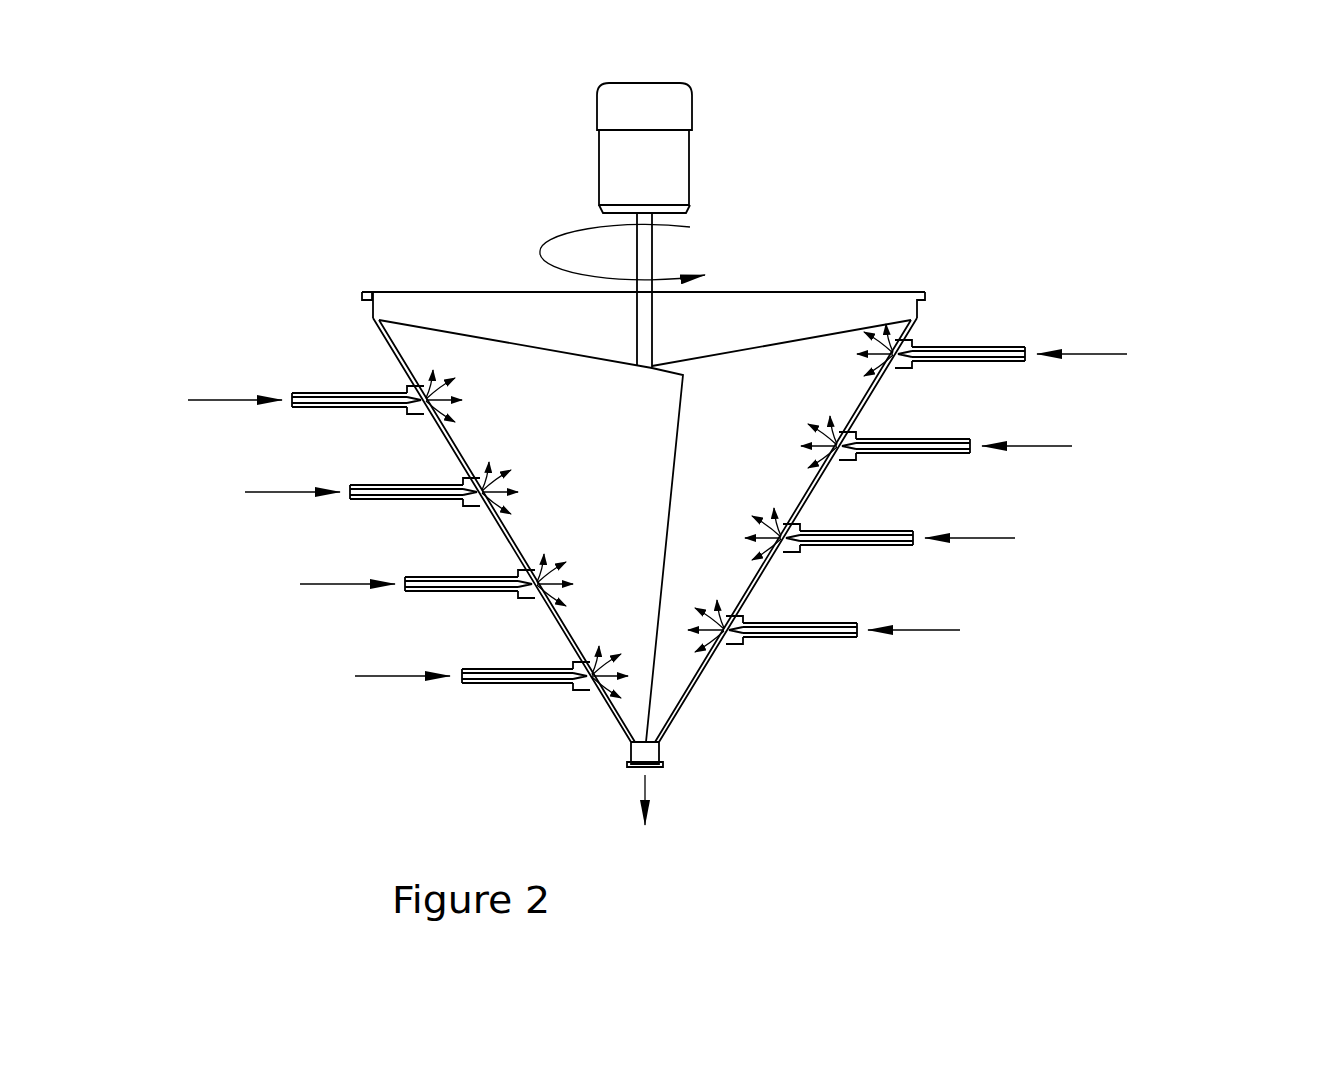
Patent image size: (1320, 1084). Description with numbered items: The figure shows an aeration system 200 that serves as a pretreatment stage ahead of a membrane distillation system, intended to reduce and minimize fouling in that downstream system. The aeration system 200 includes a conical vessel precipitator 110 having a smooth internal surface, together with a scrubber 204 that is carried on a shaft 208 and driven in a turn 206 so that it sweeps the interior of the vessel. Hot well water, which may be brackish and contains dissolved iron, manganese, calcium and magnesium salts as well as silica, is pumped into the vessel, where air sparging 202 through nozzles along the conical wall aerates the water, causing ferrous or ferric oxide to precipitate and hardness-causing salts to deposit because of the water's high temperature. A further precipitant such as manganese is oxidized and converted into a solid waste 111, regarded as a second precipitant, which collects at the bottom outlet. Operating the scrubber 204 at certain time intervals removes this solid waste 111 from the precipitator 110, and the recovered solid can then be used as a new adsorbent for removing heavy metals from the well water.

The aeration system 200 is at (896, 875).
The air sparging 202 is at (968, 347).
The scrubber 204 is at (803, 352).
The turn 206 is at (568, 232).
The shaft 208 is at (655, 248).
The conical vessel precipitator 110 is at (706, 668).
The solid waste 111 is at (652, 831).